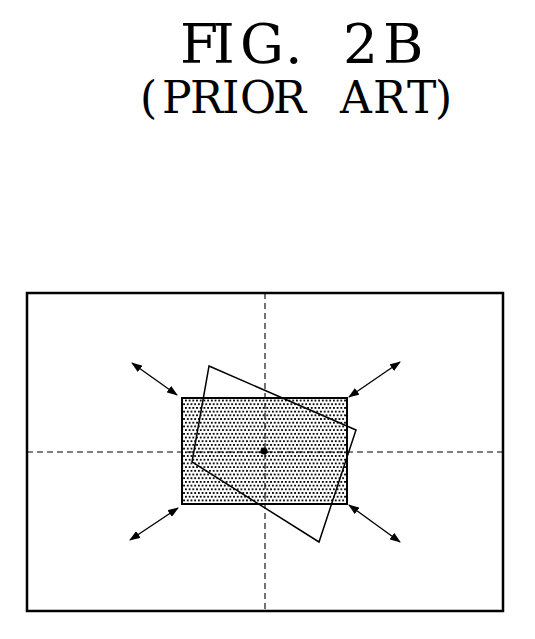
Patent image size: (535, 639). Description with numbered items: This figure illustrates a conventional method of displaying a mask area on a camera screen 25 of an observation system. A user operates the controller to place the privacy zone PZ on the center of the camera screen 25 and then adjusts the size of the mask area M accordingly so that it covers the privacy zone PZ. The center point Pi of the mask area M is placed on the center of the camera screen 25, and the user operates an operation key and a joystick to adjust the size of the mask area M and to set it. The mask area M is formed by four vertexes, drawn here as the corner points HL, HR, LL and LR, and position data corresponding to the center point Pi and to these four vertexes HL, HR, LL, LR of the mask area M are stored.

The camera screen 25 is at (358, 293).
The mask area M is at (318, 397).
The privacy zone PZ is at (209, 366).
The center point (Pi, Ti) Pi is at (264, 451).
The upper-left corner point HL(x,y) HL is at (140, 395).
The upper-right corner point HR(x,y) HR is at (389, 394).
The lower-left corner point LL(x,y) LL is at (141, 510).
The lower-right corner point LR(x,y) LR is at (389, 511).